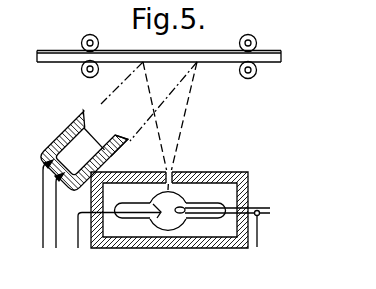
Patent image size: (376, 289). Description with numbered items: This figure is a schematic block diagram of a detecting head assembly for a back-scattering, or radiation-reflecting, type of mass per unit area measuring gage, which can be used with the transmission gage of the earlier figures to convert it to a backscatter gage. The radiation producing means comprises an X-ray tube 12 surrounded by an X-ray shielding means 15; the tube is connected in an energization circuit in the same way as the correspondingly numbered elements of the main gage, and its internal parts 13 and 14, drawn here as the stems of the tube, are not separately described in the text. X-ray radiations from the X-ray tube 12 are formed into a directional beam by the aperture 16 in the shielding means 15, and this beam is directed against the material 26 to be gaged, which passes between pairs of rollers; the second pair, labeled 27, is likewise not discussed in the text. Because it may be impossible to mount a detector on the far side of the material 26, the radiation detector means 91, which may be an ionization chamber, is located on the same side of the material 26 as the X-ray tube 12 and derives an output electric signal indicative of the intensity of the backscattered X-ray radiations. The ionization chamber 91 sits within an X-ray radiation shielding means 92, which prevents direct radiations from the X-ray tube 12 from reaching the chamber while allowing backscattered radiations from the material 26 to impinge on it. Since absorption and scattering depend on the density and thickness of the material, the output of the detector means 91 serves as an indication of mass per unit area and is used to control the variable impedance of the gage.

The X-ray tube 12 is at (185, 196).
The lamp stem (right) 13 is at (186, 218).
The lamp stem (left) 14 is at (151, 220).
The X-ray shielding means 15 is at (90, 202).
The aperture 16 is at (175, 171).
The material 26 is at (57, 50).
The feed rollers 27 is at (257, 43).
The radiation detector means 91 is at (72, 138).
The X-ray radiation shielding means 92 is at (121, 144).